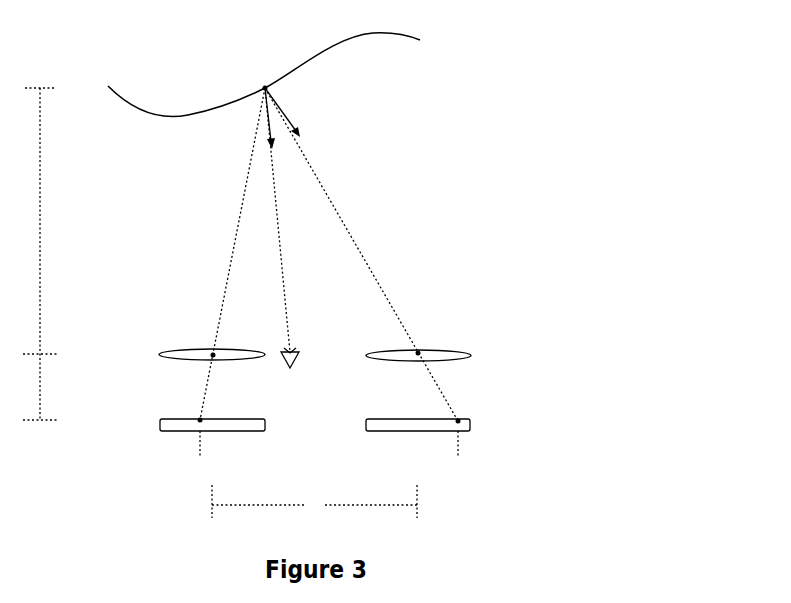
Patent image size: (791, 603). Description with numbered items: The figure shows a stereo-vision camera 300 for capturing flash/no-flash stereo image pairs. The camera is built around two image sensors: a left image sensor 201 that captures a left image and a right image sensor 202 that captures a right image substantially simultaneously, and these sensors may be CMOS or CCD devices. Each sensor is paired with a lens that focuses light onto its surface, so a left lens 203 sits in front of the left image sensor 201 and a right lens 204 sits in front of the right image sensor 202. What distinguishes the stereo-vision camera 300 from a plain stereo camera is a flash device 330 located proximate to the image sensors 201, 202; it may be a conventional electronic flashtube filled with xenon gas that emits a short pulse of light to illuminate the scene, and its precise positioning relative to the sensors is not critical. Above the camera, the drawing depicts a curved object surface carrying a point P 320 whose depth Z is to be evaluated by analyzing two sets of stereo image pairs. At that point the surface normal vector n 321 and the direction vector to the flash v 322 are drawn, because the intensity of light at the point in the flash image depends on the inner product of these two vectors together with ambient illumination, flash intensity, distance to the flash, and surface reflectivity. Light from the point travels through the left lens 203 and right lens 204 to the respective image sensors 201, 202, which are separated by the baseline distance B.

The stereo-vision camera 300 is at (348, 274).
The point P 320 is at (259, 87).
The surface normal vector n 321 is at (296, 131).
The direction vector to the flash v 322 is at (268, 122).
The left lens 203 is at (180, 350).
The right lens 204 is at (452, 351).
The left image sensor 201 is at (161, 431).
The right image sensor 202 is at (470, 431).
The flash device 330 is at (291, 369).